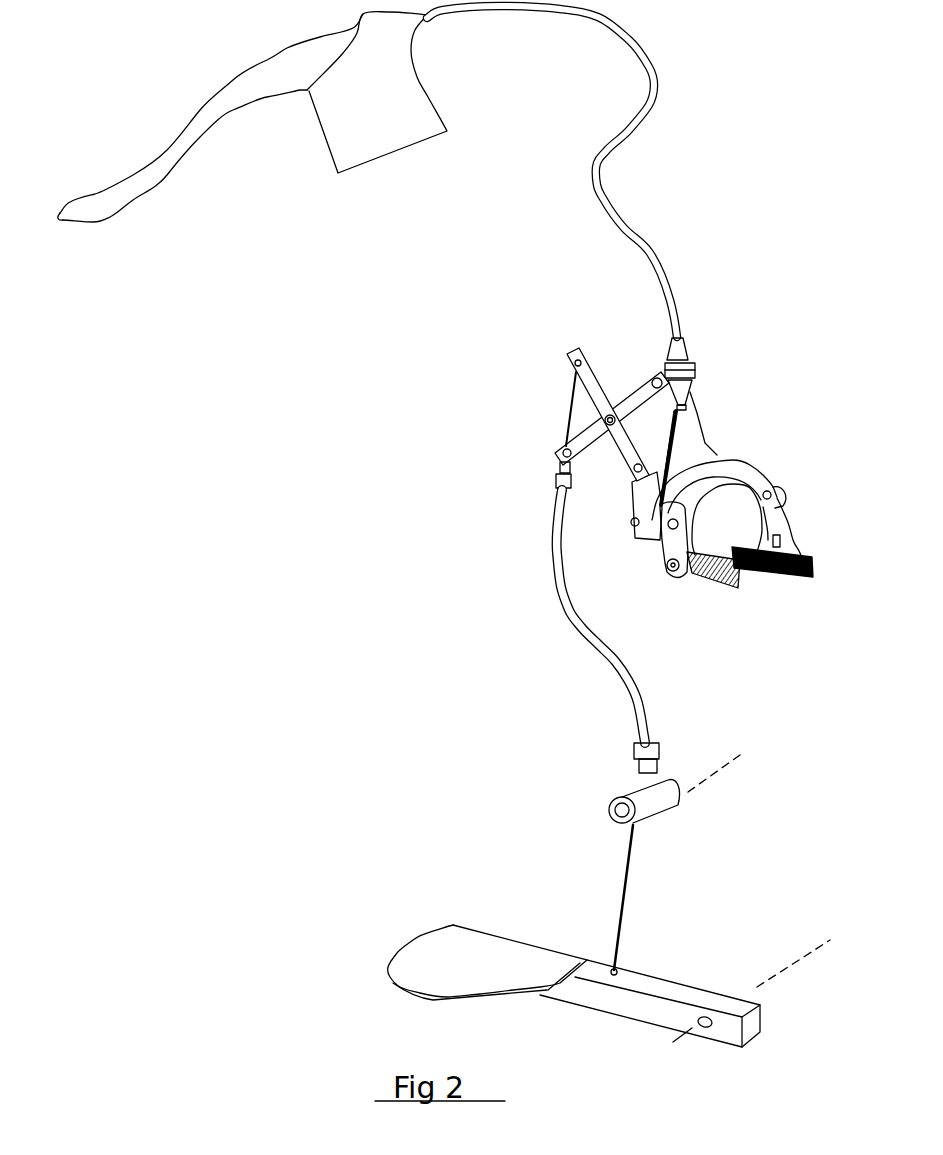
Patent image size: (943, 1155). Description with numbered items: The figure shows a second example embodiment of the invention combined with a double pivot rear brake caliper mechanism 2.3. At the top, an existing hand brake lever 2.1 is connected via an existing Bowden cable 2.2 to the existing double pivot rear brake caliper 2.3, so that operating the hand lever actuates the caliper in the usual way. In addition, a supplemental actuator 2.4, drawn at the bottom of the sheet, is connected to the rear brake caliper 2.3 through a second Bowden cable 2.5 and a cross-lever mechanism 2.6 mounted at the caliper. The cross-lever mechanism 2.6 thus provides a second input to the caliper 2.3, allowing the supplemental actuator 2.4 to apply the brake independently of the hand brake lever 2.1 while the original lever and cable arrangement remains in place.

The hand brake lever 2.1 is at (153, 177).
The Bowden cable 2.2 is at (600, 186).
The double pivot rear brake caliper 2.3 is at (695, 443).
The supplemental actuator 2.4 is at (560, 962).
The Bowden cable 2.5 is at (610, 663).
The cross-lever mechanism 2.6 is at (583, 440).